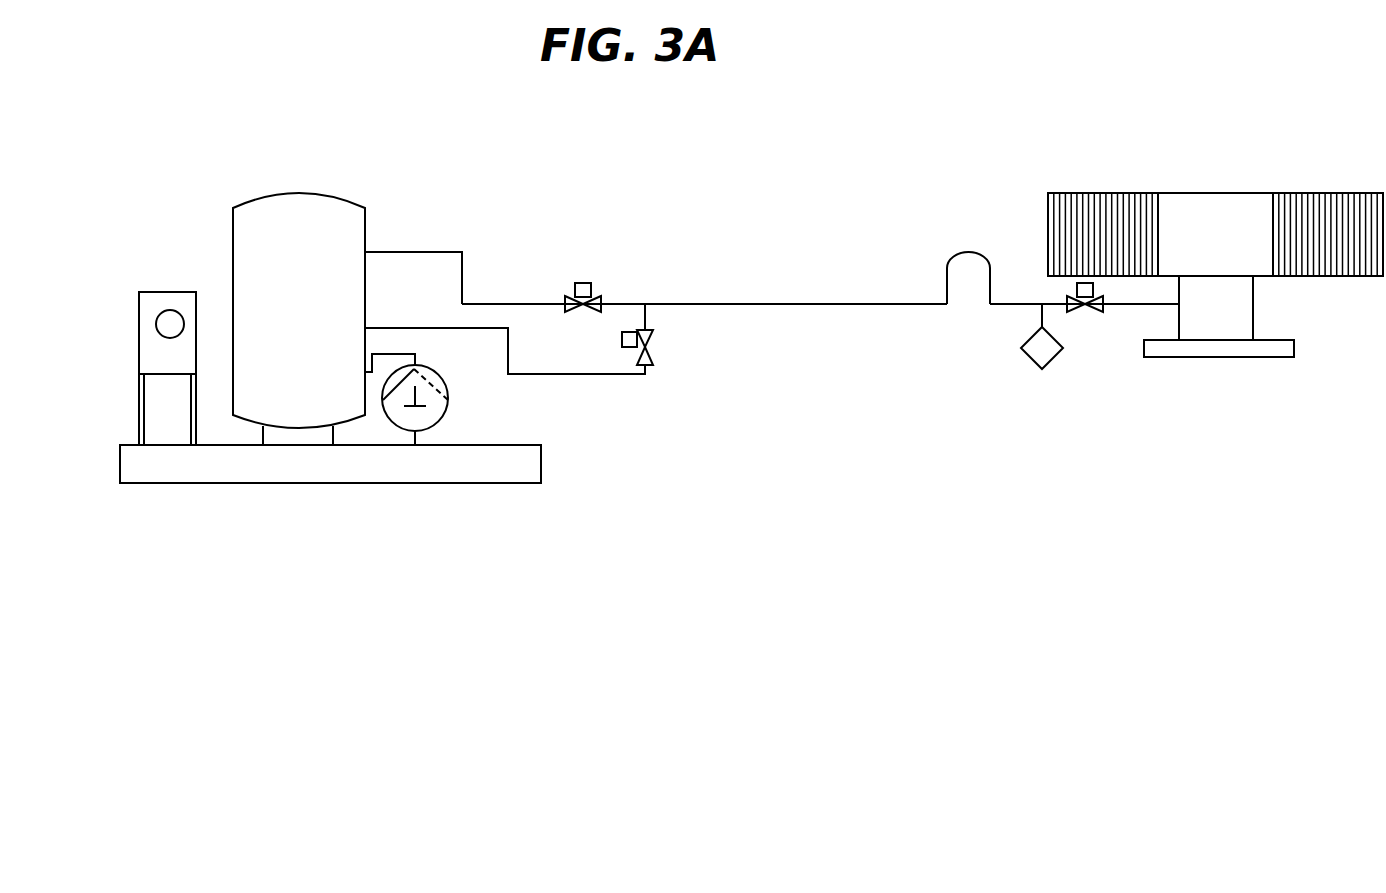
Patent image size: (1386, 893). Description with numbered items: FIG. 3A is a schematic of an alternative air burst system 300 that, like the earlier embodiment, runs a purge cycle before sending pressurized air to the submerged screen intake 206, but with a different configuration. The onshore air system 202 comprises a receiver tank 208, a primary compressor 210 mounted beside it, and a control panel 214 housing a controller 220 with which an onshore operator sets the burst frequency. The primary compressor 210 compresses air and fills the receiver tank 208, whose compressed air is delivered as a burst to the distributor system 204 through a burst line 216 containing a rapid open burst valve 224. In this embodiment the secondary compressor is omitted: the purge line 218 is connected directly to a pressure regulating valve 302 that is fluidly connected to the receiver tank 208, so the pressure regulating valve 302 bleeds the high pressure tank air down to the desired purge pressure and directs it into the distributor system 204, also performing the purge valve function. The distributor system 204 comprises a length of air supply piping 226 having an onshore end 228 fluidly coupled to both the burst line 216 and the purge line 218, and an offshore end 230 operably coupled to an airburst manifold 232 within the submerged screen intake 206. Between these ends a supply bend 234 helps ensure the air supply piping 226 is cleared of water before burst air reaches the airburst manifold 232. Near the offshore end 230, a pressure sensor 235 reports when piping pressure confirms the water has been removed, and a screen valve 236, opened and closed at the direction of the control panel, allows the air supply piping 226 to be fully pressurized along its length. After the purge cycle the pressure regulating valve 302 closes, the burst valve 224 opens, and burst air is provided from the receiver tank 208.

The air burst system 300 is at (700, 106).
The onshore air system 202 is at (185, 484).
The distributor system 204 is at (928, 304).
The submerged screen intake 206 is at (1268, 192).
The receiver tank 208 is at (272, 192).
The primary compressor 210 is at (443, 415).
The control panel 214 is at (139, 352).
The burst line 216 is at (390, 252).
The purge line 218 is at (568, 374).
The controller 220 is at (156, 324).
The burst valve 224 is at (568, 302).
The air supply piping 226 is at (875, 303).
The onshore end 228 is at (643, 304).
The offshore end 230 is at (1178, 305).
The airburst manifold 232 is at (1253, 304).
The supply bend 234 is at (947, 265).
The pressure sensor 235 is at (1045, 368).
The screen valve 236 is at (1098, 308).
The pressure regulating valve 302 is at (650, 358).